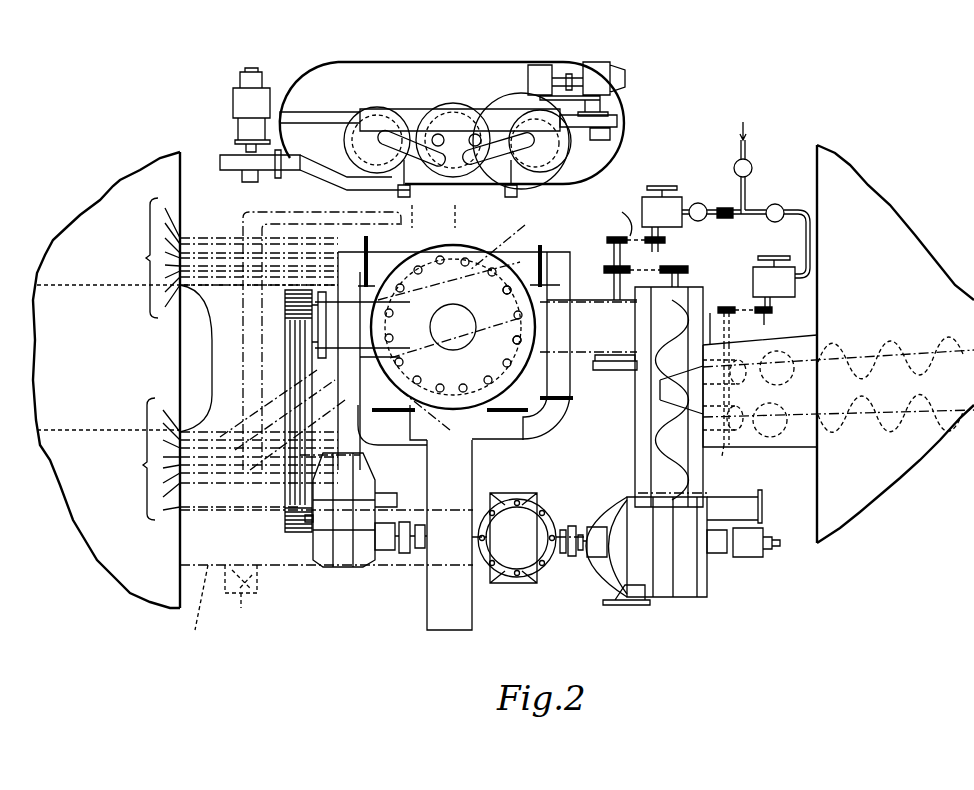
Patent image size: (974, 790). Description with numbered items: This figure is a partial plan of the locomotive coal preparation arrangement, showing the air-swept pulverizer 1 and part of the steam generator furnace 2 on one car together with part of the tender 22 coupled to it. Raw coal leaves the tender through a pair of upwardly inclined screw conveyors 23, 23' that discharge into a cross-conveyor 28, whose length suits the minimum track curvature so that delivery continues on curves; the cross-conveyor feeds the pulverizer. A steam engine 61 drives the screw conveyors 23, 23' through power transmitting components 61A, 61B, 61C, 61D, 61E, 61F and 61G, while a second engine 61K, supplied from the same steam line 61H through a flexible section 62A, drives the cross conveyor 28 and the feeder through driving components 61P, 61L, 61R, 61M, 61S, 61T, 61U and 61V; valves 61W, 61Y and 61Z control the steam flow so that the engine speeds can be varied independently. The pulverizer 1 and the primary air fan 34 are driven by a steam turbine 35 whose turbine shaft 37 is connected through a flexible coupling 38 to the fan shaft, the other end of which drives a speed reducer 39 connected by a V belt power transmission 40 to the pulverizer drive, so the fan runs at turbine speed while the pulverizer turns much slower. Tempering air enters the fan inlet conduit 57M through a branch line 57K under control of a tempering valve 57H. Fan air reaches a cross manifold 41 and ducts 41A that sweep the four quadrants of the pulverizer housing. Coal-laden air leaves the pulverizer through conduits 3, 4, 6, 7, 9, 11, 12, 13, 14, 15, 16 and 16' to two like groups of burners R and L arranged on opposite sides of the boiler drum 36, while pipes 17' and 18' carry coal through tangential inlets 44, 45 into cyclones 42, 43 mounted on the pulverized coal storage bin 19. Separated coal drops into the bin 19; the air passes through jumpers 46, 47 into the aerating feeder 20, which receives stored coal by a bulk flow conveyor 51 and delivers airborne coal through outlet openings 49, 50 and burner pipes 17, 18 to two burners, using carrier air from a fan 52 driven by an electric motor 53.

The air-swept pulverizer 1 is at (434, 367).
The steam generator furnace 2 is at (93, 485).
The burner pipe 3 is at (311, 243).
The burner pipe 4 is at (505, 296).
The burner pipe 6 is at (396, 303).
The burner pipe 7 is at (383, 262).
The burner pipe 9 is at (420, 275).
The burner pipe 11 is at (280, 478).
The burner pipe 12 is at (488, 350).
The burner pipe 13 is at (394, 339).
The burner pipe 14 is at (458, 420).
The burner pipe 15 is at (412, 359).
The burner pipe 16 is at (474, 363).
The burner pipe 16' is at (281, 420).
The burner pipe 17 is at (459, 211).
The coal and air pipe 17' is at (421, 211).
The burner pipe 18 is at (322, 331).
The coal and air pipe 18' is at (513, 240).
The pulverized coal storage bin 19 is at (335, 64).
The aerating feeder 20 is at (453, 106).
The tender 22 is at (893, 290).
The screw conveyor 23 is at (890, 338).
The screw conveyor 23' is at (890, 435).
The cross-conveyor 28 is at (635, 455).
The primary air fan 34 is at (452, 615).
The steam turbine 35 is at (665, 580).
The steam and water drum 36 is at (80, 430).
The turbine shaft 37 is at (584, 555).
The flexible coupling 38 is at (572, 525).
The speed reducer 39 is at (340, 570).
The V belt power transmission 40 is at (285, 524).
The cross manifold 41 is at (420, 448).
The ducts 41A is at (578, 390).
The cyclone 42 is at (566, 150).
The cyclone 43 is at (350, 142).
The tangential inlet 44 is at (398, 192).
The tangential inlet 45 is at (517, 192).
The jumper duct 46 is at (400, 138).
The jumper duct 47 is at (520, 150).
The outlet opening 49 is at (442, 133).
The outlet opening 50 is at (478, 134).
The bulk flow conveyor 51 is at (618, 123).
The fan 52 is at (222, 156).
The electric motor 53 is at (238, 102).
The tempering valve 57H is at (246, 612).
The branch line 57K is at (257, 588).
The inlet conduit 57M is at (189, 606).
The steam engine 61 is at (778, 290).
The power transmitting component 61A is at (766, 302).
The power transmitting component 61B is at (780, 325).
The power transmitting component 61C is at (744, 329).
The power transmitting component 61D is at (724, 307).
The power transmitting component 61E is at (712, 329).
The power transmitting component 61F is at (734, 410).
The power transmitting component 61G is at (736, 362).
The steam line 61H is at (748, 138).
The steam engine 61K is at (662, 206).
The driving component 61L is at (665, 240).
The line 61M is at (664, 254).
The driving component 61P is at (613, 215).
The driving component 61R is at (612, 237).
The driving component 61S is at (614, 245).
The driving component 61T is at (604, 270).
The driving component 61U is at (614, 284).
The driving component 61V is at (688, 270).
The valve 61W is at (752, 163).
The valve 61Y is at (699, 203).
The valve 61Z is at (777, 204).
The flexible section 62A is at (722, 218).
The right burner group R is at (233, 258).
The left burner group L is at (230, 459).